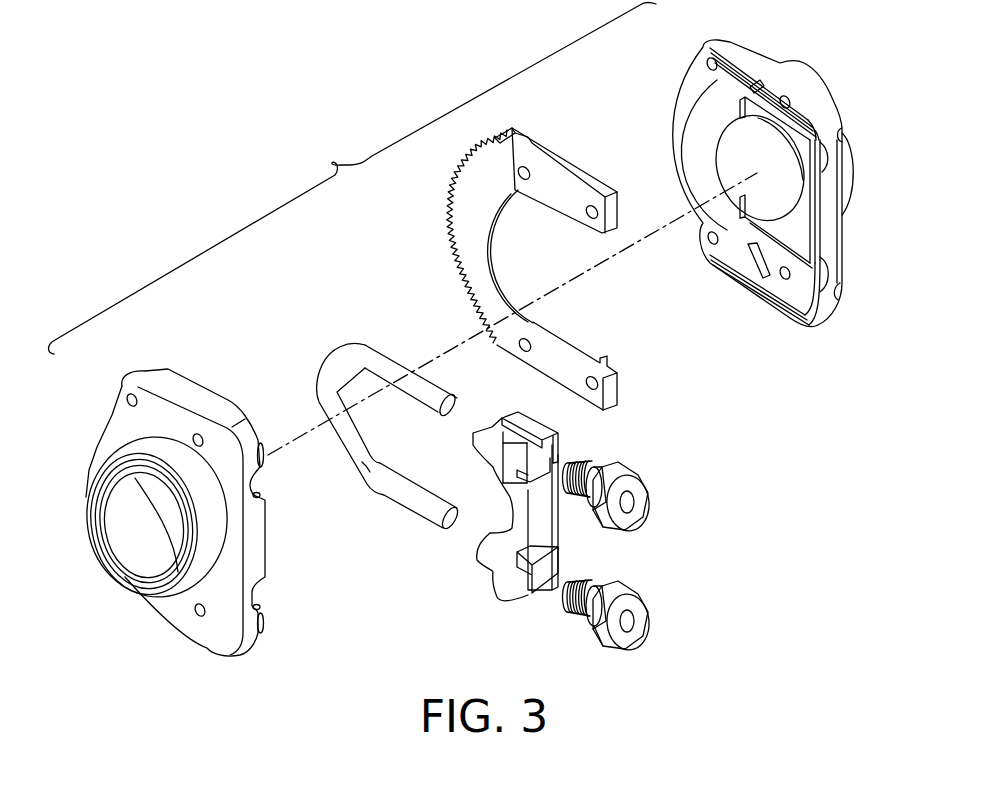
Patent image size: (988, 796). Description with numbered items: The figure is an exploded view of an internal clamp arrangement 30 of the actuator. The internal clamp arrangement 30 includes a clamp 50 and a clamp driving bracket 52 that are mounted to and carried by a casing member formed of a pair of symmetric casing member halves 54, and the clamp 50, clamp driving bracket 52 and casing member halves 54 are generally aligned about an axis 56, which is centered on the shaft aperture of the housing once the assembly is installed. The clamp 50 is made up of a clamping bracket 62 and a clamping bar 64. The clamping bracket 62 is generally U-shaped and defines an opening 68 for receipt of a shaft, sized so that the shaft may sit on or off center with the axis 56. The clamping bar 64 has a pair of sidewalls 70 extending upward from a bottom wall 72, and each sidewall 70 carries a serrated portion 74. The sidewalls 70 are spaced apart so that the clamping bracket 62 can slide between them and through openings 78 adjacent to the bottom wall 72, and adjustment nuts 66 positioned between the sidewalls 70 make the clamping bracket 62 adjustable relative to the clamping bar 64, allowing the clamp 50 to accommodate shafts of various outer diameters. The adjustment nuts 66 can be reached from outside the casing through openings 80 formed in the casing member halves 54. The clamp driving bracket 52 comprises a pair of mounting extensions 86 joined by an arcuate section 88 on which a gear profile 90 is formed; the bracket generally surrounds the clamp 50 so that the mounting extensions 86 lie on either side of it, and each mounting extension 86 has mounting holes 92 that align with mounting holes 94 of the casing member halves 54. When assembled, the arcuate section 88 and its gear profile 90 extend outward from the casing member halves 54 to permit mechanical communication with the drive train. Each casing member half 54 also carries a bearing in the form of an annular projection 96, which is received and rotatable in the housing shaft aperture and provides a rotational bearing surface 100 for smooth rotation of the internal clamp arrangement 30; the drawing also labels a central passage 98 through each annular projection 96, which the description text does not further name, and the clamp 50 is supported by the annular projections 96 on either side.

The internal clamp arrangement 30 is at (333, 163).
The clamp 50 is at (447, 549).
The clamp driving bracket 52 is at (658, 343).
The casing member halves 54 is at (226, 647).
The axis 56 is at (650, 238).
The clamping bracket 62 is at (385, 485).
The clamping bar 64 is at (530, 536).
The adjustment nuts 66 is at (636, 508).
The opening 68 is at (386, 421).
The sidewalls 70 is at (562, 448).
The bottom wall 72 is at (548, 515).
The serrated portion 74 is at (476, 460).
The openings 78 is at (551, 427).
The openings 80 is at (262, 450).
The mounting extensions 86 is at (555, 182).
The arcuate section 88 is at (497, 225).
The gear profile 90 is at (450, 207).
The mounting holes 92 is at (527, 170).
The mounting holes 94 is at (137, 398).
The annular projection 96 is at (130, 450).
The bore 98 is at (124, 540).
The rotational bearing surface 100 is at (215, 525).